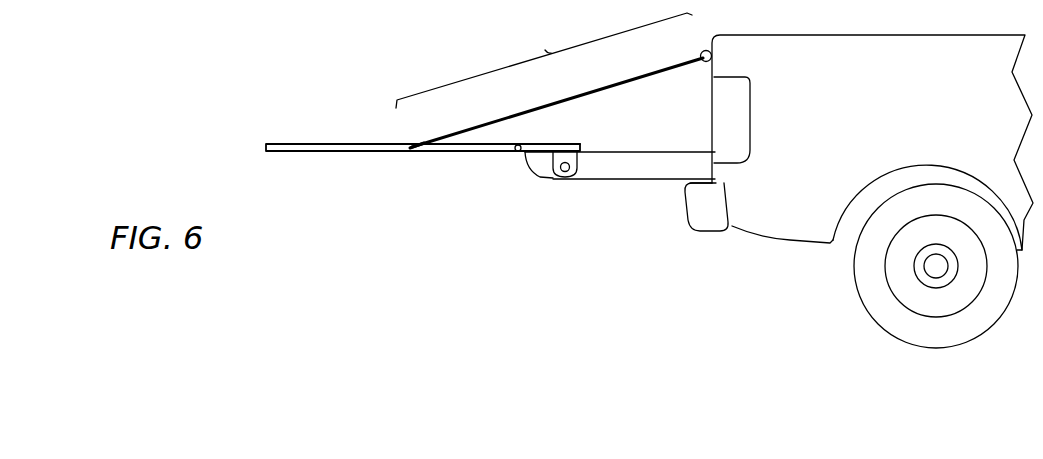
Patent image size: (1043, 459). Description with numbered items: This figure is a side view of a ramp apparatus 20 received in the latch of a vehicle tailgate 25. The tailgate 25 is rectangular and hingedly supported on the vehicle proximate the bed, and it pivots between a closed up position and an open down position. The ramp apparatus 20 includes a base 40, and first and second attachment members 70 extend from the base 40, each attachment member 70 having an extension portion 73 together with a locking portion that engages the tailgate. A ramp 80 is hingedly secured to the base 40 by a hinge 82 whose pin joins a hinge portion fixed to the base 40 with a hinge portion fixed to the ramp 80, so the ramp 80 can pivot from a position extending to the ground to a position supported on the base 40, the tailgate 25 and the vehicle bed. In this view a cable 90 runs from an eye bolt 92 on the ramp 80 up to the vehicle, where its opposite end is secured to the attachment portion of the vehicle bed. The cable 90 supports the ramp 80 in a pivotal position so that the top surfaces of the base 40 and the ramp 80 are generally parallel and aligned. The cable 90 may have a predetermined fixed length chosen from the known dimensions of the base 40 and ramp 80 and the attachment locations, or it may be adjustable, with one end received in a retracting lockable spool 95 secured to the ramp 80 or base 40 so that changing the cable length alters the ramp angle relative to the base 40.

The ramp apparatus 20 is at (368, 175).
The tailgate 25 is at (645, 165).
The base 40 is at (567, 145).
The attachment member 70 is at (553, 180).
The extension portion 73 is at (572, 178).
The ramp 80 is at (320, 153).
The hinge 82 is at (518, 152).
The cable 90 is at (607, 87).
The eye bolt 92 is at (410, 146).
The retracting lockable spool 95 is at (703, 52).